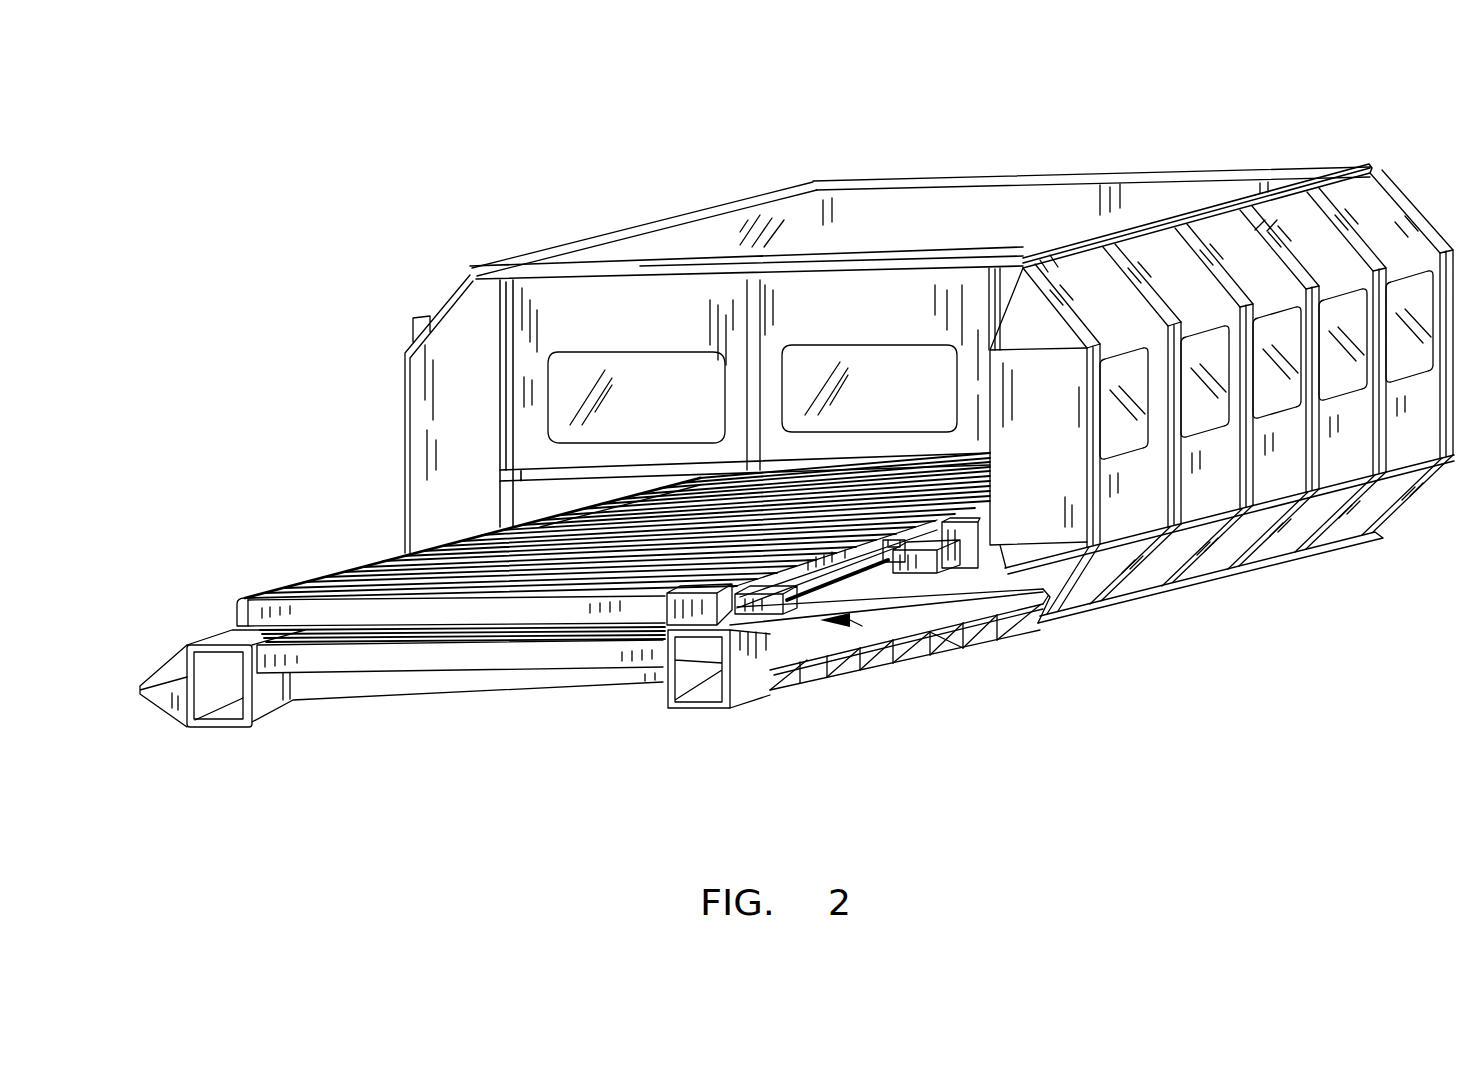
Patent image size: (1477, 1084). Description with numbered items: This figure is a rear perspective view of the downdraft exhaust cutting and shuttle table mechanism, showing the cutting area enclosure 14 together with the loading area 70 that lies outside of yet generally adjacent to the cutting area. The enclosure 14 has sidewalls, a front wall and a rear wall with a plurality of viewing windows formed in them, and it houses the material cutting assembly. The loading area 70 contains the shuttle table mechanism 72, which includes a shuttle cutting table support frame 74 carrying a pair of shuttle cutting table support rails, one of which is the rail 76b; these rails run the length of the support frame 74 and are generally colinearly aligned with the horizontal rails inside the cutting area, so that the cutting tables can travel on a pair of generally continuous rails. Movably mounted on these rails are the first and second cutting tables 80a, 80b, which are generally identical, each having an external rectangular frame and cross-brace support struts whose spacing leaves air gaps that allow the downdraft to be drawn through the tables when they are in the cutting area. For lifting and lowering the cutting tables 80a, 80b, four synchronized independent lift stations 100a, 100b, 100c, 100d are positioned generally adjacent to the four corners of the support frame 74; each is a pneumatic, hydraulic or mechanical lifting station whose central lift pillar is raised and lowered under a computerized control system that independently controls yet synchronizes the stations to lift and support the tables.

The cutting area enclosure 14 is at (1228, 254).
The loading area 70 is at (352, 553).
The shuttle table mechanism 72 is at (873, 580).
The shuttle cutting table support frame 74 is at (760, 643).
The shuttle cutting table support rail 76b is at (960, 648).
The first cutting table 80a is at (452, 612).
The second cutting table 80b is at (588, 655).
The independent lift station 100a is at (452, 538).
The independent lift station 100b is at (247, 598).
The independent lift station 100c is at (770, 603).
The independent lift station 100d is at (1030, 617).